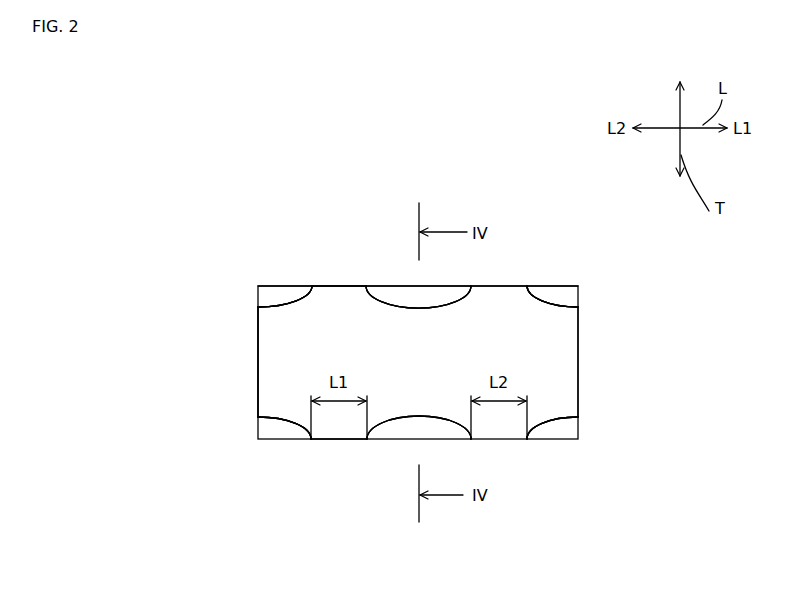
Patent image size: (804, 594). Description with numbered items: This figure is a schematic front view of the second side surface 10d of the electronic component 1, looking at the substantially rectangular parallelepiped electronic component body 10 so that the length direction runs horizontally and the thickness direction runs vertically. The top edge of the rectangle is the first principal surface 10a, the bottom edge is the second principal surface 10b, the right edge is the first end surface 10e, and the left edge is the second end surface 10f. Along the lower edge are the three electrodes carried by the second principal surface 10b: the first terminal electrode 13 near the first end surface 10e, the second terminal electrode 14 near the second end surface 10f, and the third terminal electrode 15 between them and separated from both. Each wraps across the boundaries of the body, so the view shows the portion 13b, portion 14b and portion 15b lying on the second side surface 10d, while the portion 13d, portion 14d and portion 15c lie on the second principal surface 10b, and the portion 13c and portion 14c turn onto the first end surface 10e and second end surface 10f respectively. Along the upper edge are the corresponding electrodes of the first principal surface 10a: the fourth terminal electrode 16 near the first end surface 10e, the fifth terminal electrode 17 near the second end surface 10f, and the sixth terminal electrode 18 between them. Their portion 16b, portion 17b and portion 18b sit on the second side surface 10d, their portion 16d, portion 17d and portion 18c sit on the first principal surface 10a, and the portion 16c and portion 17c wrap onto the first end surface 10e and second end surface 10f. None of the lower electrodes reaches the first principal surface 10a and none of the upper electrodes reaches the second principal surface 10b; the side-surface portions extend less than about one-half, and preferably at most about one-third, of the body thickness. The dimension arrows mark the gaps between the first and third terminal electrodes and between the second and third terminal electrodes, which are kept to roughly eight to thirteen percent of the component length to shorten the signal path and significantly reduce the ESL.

The electronic component 1 is at (493, 199).
The electronic component body 10 is at (320, 285).
The first principal surface 10a is at (345, 286).
The second principal surface 10b is at (340, 440).
The second side surface 10d is at (285, 384).
The first end surface 10e is at (578, 365).
The second end surface 10f is at (258, 363).
The first terminal electrode 13 is at (569, 441).
The portion of the first terminal electrode on the second side surface 13b is at (551, 432).
The portion of the first terminal electrode on the first end surface 13c is at (580, 424).
The portion of the first terminal electrode on the second principal surface 13d is at (540, 440).
The second terminal electrode 14 is at (276, 442).
The portion of the second terminal electrode on the second side surface 14b is at (285, 440).
The portion of the second terminal electrode on the second end surface 14c is at (258, 425).
The portion of the second terminal electrode on the second principal surface 14d is at (295, 440).
The third terminal electrode 15 is at (405, 440).
The portion of the third terminal electrode on the second side surface 15b is at (397, 432).
The portion of the third terminal electrode on the second principal surface 15c is at (438, 442).
The fourth terminal electrode 16 is at (567, 283).
The portion of the fourth terminal electrode on the second side surface 16b is at (569, 292).
The portion of the fourth terminal electrode on the first end surface 16c is at (580, 300).
The portion of the fourth terminal electrode on the first principal surface 16d is at (533, 285).
The fifth terminal electrode 17 is at (268, 283).
The portion of the fifth terminal electrode on the second side surface 17b is at (258, 294).
The portion of the fifth terminal electrode on the second end surface 17c is at (258, 305).
The portion of the fifth terminal electrode on the first principal surface 17d is at (292, 285).
The sixth terminal electrode 18 is at (405, 284).
The portion of the sixth terminal electrode on the second side surface 18b is at (391, 297).
The portion of the sixth terminal electrode on the first principal surface 18c is at (428, 285).